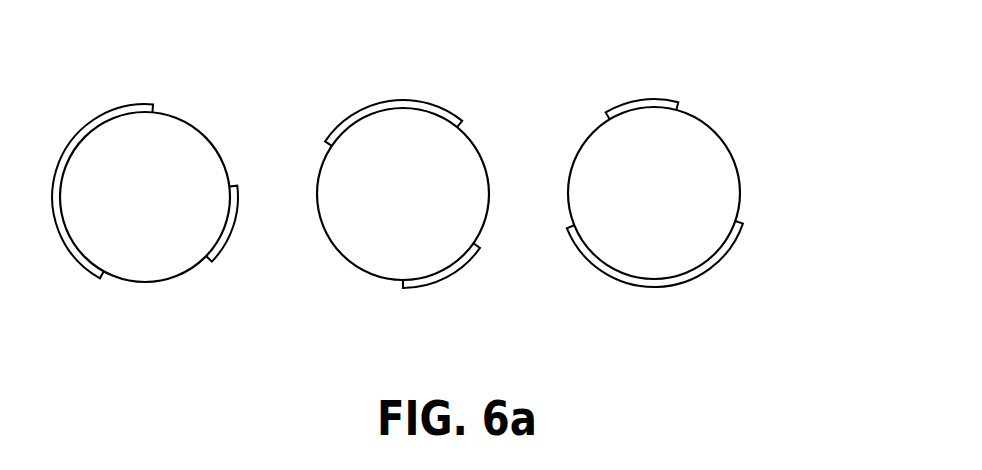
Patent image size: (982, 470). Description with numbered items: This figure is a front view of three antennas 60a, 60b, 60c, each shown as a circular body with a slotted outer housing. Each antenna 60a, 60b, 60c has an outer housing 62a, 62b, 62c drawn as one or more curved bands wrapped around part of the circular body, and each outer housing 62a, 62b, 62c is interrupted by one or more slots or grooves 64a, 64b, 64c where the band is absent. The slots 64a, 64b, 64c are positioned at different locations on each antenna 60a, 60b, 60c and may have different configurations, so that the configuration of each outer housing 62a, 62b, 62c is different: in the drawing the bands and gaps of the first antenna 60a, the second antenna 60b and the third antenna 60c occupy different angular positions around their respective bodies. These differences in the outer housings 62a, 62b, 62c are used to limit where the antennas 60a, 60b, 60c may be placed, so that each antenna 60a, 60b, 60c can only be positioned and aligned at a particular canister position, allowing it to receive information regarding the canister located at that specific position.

The antenna 60a is at (150, 138).
The outer housing 62a is at (83, 132).
The slot 64a is at (205, 132).
The antenna 60b is at (449, 140).
The outer housing 62b is at (390, 108).
The slot 64b is at (482, 157).
The antenna 60c is at (698, 145).
The outer housing 62c is at (640, 100).
The slot 64c is at (740, 193).